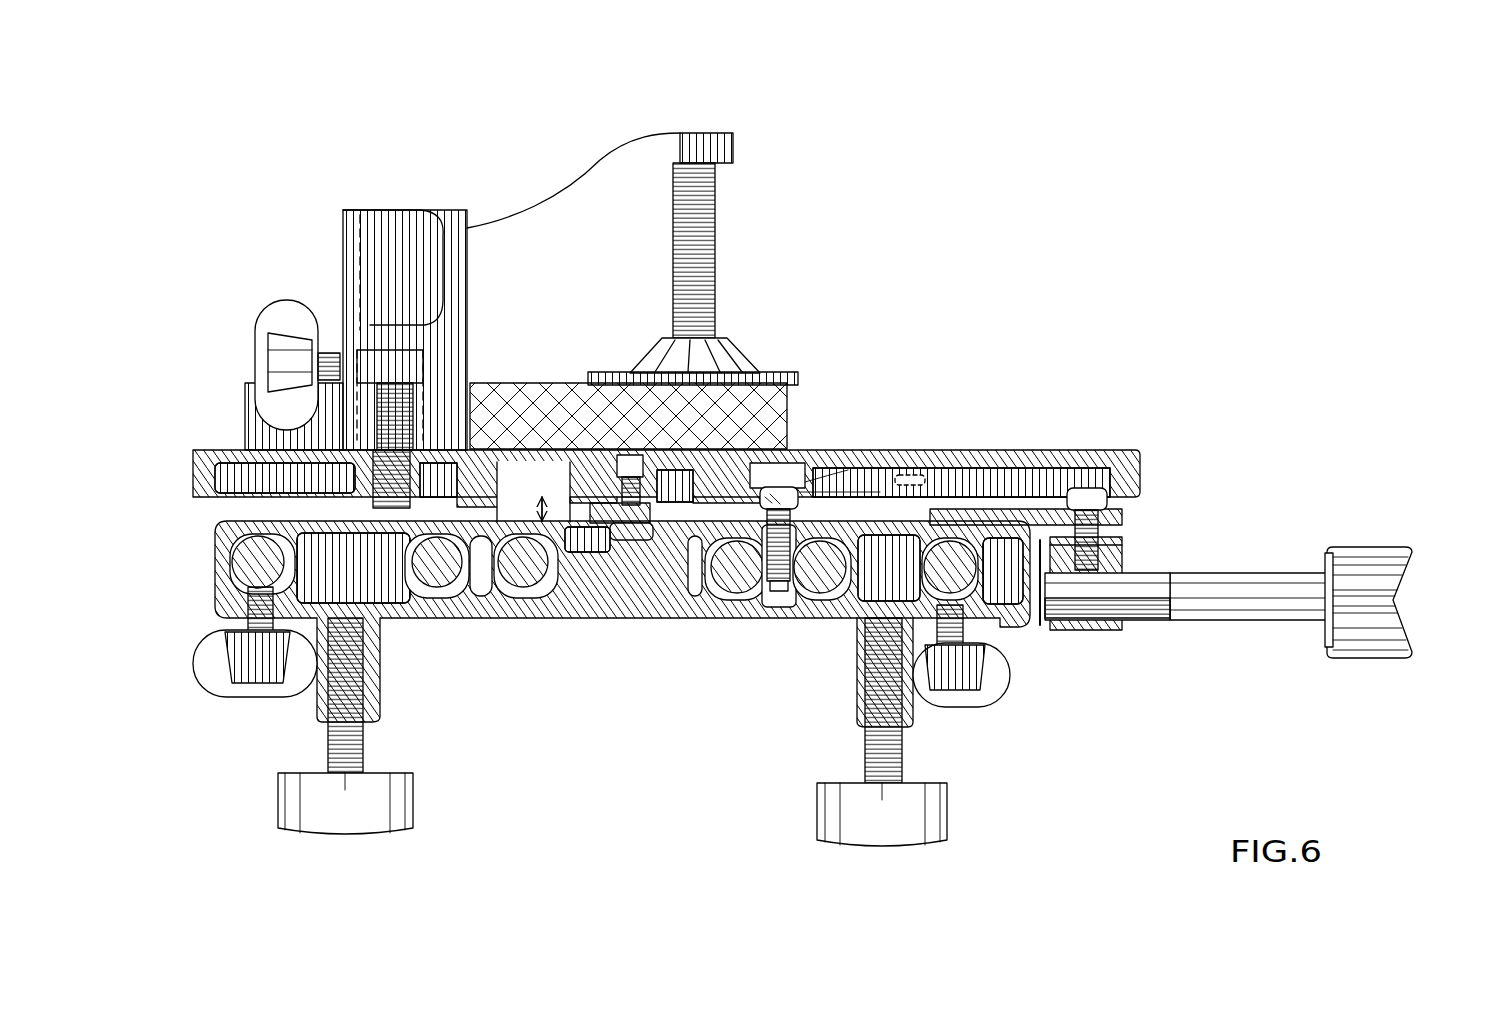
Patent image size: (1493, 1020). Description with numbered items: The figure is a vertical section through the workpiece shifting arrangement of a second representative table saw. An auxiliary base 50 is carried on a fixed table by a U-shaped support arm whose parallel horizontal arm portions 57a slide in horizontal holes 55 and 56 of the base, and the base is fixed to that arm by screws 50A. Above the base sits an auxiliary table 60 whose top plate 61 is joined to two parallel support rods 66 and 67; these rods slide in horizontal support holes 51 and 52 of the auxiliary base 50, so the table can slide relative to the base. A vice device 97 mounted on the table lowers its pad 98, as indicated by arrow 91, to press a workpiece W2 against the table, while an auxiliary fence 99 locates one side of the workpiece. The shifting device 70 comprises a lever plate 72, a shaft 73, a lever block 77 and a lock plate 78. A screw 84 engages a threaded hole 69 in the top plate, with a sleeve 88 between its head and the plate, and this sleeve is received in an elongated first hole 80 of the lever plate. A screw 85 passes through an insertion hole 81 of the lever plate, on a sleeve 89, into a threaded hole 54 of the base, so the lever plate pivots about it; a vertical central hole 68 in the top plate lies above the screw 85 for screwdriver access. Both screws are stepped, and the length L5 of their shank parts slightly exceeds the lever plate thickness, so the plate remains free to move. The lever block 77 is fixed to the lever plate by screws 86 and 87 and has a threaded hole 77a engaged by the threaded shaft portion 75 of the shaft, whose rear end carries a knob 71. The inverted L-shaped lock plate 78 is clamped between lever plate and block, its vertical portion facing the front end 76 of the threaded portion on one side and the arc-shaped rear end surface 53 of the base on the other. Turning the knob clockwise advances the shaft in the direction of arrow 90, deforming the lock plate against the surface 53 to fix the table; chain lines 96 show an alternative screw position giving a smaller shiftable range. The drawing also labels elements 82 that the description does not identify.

The auxiliary base 50 is at (222, 582).
The screws 50A is at (210, 690).
The horizontal support hole 51 is at (510, 620).
The horizontal support hole 52 is at (690, 620).
The rear end surface 53 is at (1027, 628).
The threaded hole 54 is at (758, 620).
The horizontal hole 55 is at (238, 548).
The horizontal hole 56 is at (968, 700).
The horizontal arm portions 57a is at (230, 597).
The auxiliary table 60 is at (1150, 453).
The top plate 61 is at (988, 468).
The support rod 66 is at (492, 619).
The support rod 67 is at (680, 619).
The vertical central hole 68 is at (848, 470).
The threaded hole 69 is at (622, 460).
The shifting device 70 is at (1420, 545).
The knob 71 is at (1360, 567).
The lever plate 72 is at (1132, 520).
The shaft 73 is at (1264, 636).
The threaded shaft portion 75 is at (1160, 628).
The front end 76 is at (1080, 634).
The lever block 77 is at (1123, 637).
The threaded hole 77a is at (1118, 588).
The lock plate 78 is at (1043, 634).
The first hole 80 is at (578, 620).
The insertion hole 81 is at (790, 620).
The fixing screw 82 is at (1124, 542).
The screw 84 is at (618, 619).
The screw 85 is at (806, 488).
The screw 86 is at (1086, 487).
The screw 87 is at (1086, 540).
The sleeve 88 is at (655, 619).
The sleeve 89 is at (828, 620).
The arrow 90 is at (1130, 800).
The arrow 91 is at (645, 255).
The chain lines 96 is at (925, 455).
The vice device 97 is at (740, 222).
The pad 98 is at (722, 358).
The auxiliary fence 99 is at (457, 275).
The workpiece W2 is at (772, 448).
The length L5 is at (463, 619).